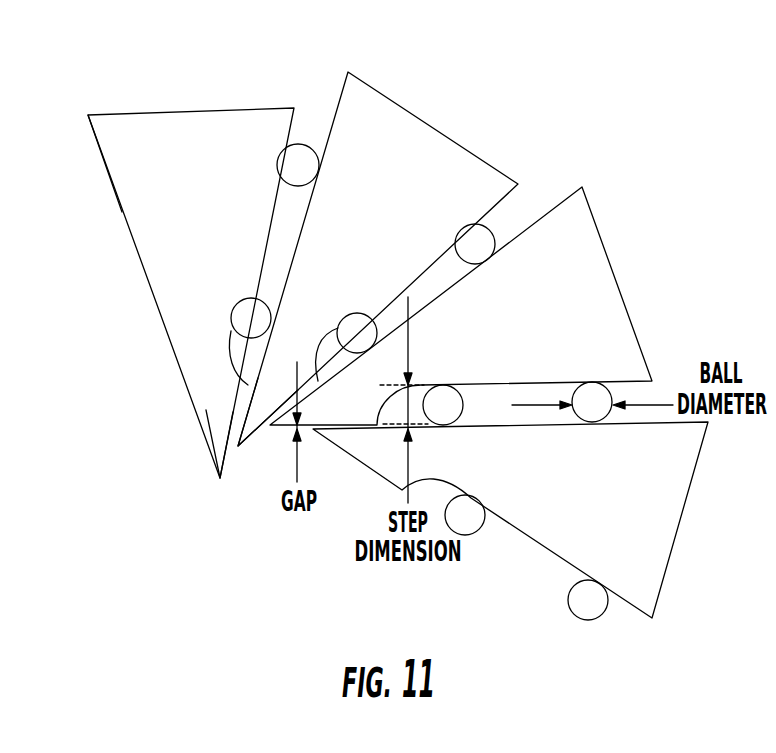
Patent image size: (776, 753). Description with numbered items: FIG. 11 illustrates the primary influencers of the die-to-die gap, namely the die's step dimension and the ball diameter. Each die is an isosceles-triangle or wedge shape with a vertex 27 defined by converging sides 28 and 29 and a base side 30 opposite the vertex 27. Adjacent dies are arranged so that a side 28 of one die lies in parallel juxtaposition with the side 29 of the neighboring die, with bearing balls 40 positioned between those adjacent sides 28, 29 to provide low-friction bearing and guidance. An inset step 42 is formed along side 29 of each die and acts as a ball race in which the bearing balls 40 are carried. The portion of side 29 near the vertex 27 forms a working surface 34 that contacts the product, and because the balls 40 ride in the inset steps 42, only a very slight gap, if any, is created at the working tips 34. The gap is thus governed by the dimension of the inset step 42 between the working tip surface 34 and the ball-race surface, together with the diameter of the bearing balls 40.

The vertex 27 is at (221, 478).
The side 28 is at (123, 212).
The side 29 is at (263, 215).
The base side 30 is at (157, 113).
The working surface 34 is at (226, 473).
The bearing ball 40 is at (299, 163).
The inset step 42 is at (263, 235).